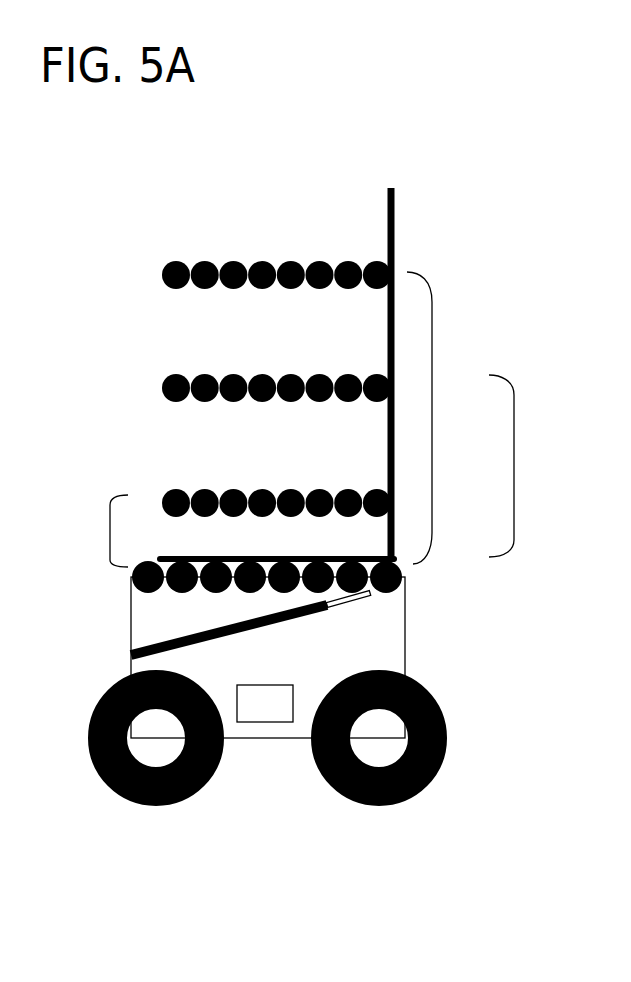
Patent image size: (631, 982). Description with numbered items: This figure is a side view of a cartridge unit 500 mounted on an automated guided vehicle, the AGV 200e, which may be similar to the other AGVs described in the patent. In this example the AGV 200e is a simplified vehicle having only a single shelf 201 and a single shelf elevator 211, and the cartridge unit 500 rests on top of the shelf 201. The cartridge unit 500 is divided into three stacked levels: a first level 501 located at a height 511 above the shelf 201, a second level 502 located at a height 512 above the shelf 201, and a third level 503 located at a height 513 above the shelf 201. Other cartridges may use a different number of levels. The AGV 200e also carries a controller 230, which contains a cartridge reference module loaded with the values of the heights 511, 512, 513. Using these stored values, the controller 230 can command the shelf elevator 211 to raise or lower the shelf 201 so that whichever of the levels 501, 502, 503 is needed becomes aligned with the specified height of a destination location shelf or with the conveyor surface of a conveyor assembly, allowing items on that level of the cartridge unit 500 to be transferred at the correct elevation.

The cartridge unit 500 is at (312, 344).
The third level 503 is at (172, 266).
The second level 502 is at (172, 379).
The first level 501 is at (172, 493).
The height of first level 511 is at (110, 530).
The height of second level 512 is at (514, 467).
The height of third level 513 is at (432, 420).
The shelf 201 is at (404, 578).
The shelf elevator 211 is at (275, 612).
The controller 230 is at (282, 714).
The AGV 200e is at (291, 732).